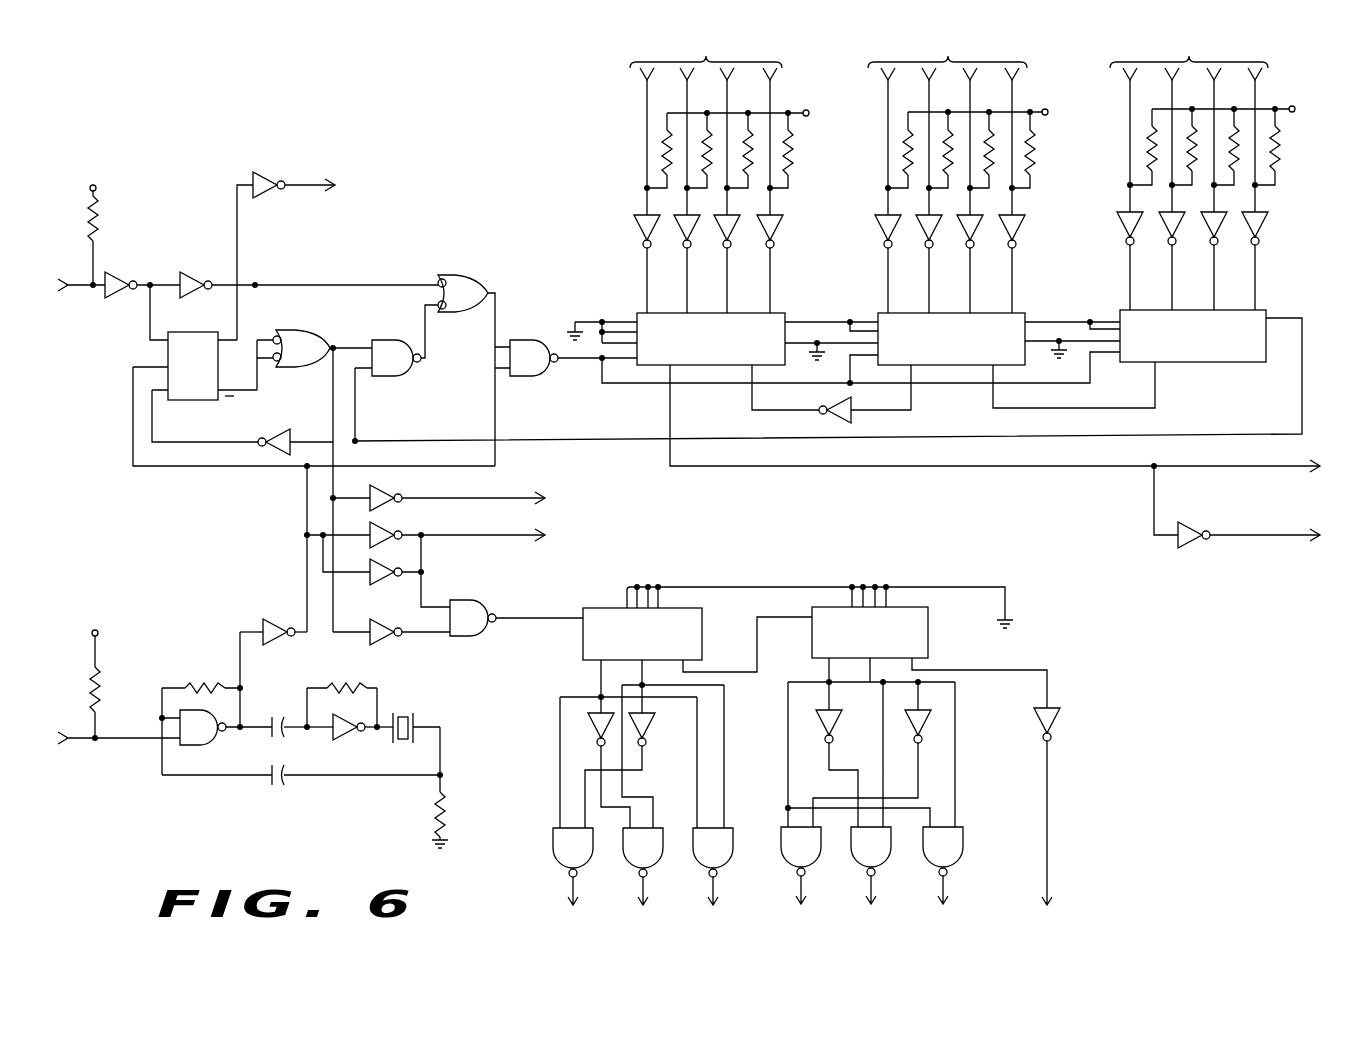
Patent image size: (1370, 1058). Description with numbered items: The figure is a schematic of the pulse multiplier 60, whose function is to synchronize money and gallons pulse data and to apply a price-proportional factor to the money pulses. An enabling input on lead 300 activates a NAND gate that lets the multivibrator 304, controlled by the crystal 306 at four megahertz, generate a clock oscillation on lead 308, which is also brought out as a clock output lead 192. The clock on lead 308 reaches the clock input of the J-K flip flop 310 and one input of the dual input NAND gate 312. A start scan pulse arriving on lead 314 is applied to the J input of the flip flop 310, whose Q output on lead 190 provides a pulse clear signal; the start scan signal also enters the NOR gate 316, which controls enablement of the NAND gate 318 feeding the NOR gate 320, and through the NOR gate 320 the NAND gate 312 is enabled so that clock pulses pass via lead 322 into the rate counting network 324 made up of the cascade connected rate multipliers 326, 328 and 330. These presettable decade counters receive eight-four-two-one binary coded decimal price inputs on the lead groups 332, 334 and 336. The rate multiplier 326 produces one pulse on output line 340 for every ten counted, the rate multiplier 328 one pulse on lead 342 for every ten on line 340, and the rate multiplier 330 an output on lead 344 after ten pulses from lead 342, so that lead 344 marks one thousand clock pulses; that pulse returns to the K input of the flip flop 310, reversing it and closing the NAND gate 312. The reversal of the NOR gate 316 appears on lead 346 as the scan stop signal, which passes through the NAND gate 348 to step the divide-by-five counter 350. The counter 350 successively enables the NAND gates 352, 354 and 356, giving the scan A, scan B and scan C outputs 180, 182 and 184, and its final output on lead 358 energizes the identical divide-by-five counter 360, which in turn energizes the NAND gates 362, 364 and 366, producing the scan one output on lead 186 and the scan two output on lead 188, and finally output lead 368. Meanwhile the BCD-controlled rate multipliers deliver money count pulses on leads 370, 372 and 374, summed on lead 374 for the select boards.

The pulse multiplier 60 is at (510, 158).
The scan A line 180 is at (577, 890).
The scan B line 182 is at (647, 890).
The scan C line 184 is at (717, 890).
The scan one output lead 186 is at (806, 889).
The scan 2 output lead 188 is at (876, 889).
The lead 190 is at (292, 185).
The clock line 192 is at (470, 535).
The lead 300 is at (119, 737).
The multivibrator 304 is at (355, 768).
The crystal 306 is at (419, 719).
The lead 308 is at (133, 438).
The J-K flip flop 310 is at (181, 400).
The dual input NAND gate 312 is at (540, 367).
The lead 314 is at (80, 284).
The NOR gate 316 is at (301, 318).
The NAND gate 318 is at (386, 377).
The NOR gate 320 is at (450, 278).
The lead 322 is at (592, 362).
The rate counting network 324 is at (800, 273).
The rate multiplier 326 is at (784, 312).
The rate multiplier 328 is at (1018, 311).
The rate multiplier 330 is at (1266, 310).
The lead group 332 is at (735, 176).
The lead group 334 is at (973, 176).
The lead group 336 is at (1218, 174).
The output line 340 is at (822, 323).
The lead 342 is at (1050, 323).
The lead 344 is at (1303, 360).
The lead 346 is at (333, 409).
The NAND gate 348 is at (474, 601).
The divide-by-five counter 350 is at (608, 605).
The NAND gate 352 is at (560, 853).
The NAND gate 354 is at (630, 853).
The NAND gate 356 is at (700, 853).
The lead 358 is at (758, 662).
The divide-by-five counter 360 is at (930, 636).
The NAND gate 362 is at (788, 852).
The NAND gate 364 is at (858, 852).
The NAND gate 366 is at (930, 852).
The output lead 368 is at (1050, 770).
The lead 370 is at (1156, 392).
The lead 372 is at (913, 408).
The lead 374 is at (672, 420).